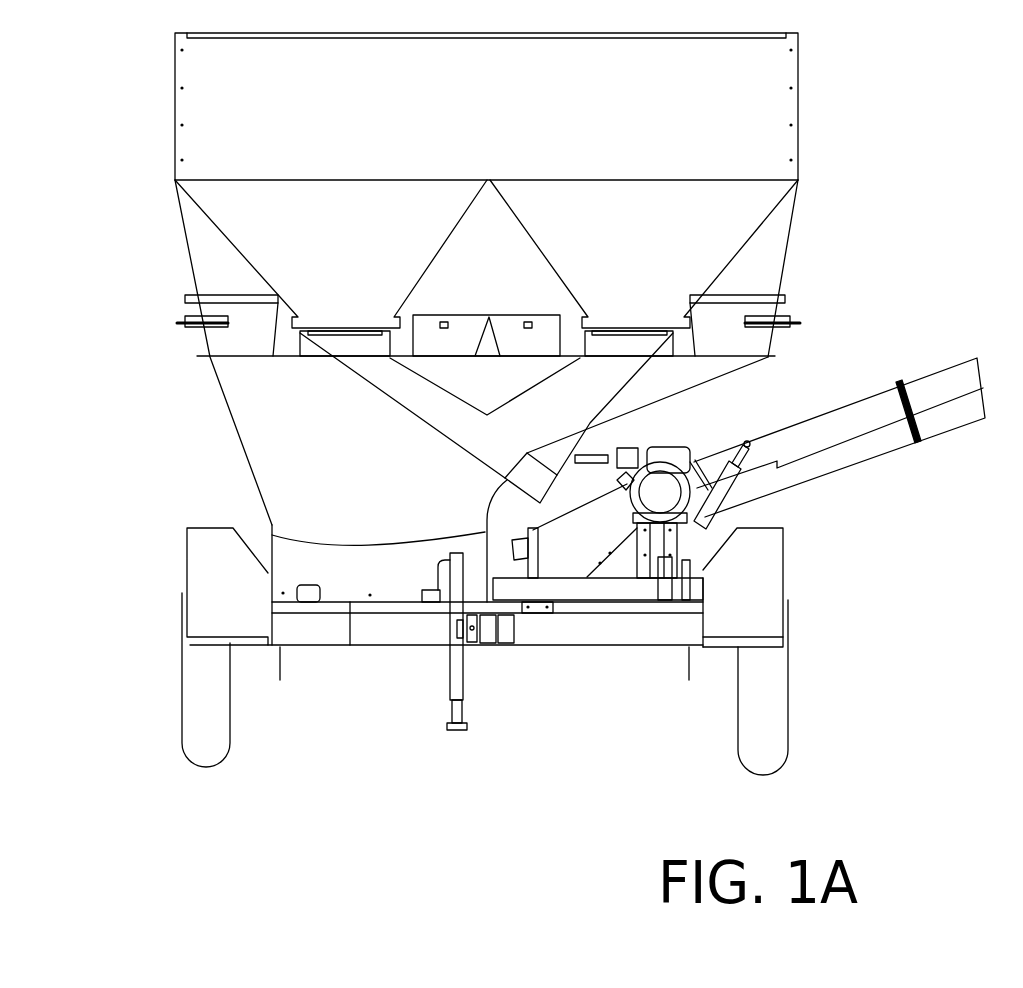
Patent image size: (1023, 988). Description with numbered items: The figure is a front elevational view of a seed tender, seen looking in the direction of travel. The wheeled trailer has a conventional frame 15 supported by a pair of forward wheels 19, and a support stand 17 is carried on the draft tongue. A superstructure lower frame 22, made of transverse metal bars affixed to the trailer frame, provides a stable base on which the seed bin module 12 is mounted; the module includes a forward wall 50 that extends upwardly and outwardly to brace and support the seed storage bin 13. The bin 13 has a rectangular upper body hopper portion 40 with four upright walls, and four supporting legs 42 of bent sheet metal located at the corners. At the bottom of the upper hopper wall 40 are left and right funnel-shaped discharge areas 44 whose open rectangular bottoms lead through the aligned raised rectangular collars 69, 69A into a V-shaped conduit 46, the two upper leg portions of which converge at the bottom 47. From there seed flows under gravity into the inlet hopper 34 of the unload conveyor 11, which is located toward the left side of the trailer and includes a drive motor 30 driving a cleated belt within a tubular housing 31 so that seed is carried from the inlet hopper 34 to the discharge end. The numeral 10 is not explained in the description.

The spreader 10 is at (143, 642).
The unload conveyor 11 is at (881, 356).
The seed bin module 12 is at (192, 432).
The seed storage bin 13 is at (497, 117).
The frame 15 is at (615, 625).
The support stand 17 is at (470, 690).
The forward wheels 19 is at (770, 730).
The lower frame 22 is at (352, 603).
The drive motor 30 is at (704, 436).
The tubular housing 31 is at (852, 430).
The inlet hopper 34 is at (582, 563).
The upper body hopper portion 40 is at (780, 95).
The supporting legs 42 is at (194, 246).
The funnel-shaped discharge areas 44 is at (373, 250).
The V-shaped conduit 46 is at (387, 382).
The bottom of the conduits 47 is at (490, 437).
The forward wall 50 is at (545, 492).
The raised rectangular collar 69 is at (358, 343).
The raised rectangular collar 69A is at (607, 343).